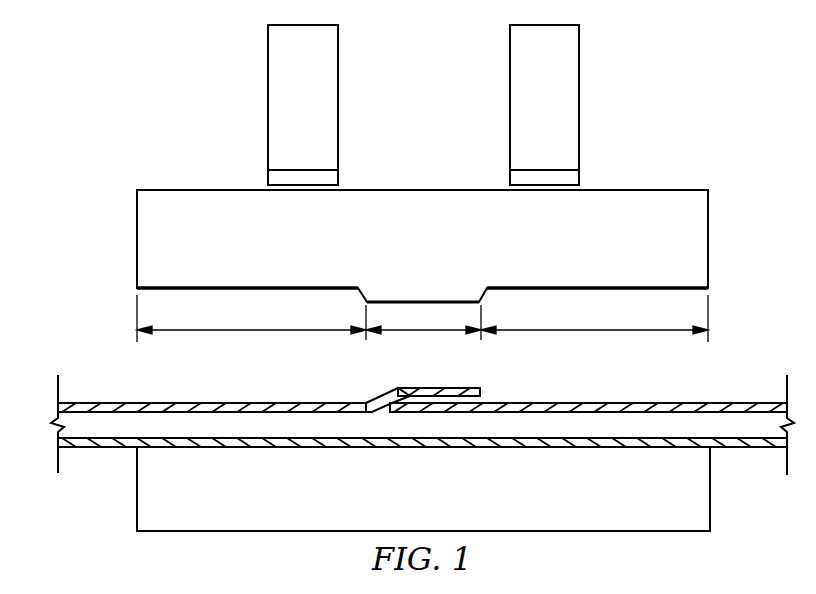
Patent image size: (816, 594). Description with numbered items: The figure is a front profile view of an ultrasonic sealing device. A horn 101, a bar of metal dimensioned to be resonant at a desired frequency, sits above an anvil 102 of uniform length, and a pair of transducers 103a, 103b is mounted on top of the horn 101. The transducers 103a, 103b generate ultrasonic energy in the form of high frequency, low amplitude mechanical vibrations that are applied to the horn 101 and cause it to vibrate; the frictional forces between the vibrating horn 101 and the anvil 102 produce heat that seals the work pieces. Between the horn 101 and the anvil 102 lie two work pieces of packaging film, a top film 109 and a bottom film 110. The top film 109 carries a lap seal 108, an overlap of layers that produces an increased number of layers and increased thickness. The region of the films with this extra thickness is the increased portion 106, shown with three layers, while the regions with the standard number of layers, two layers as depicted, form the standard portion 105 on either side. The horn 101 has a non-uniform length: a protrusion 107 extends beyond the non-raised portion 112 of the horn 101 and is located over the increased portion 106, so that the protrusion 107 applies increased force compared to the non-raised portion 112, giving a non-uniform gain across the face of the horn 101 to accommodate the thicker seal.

The horn 101 is at (137, 242).
The anvil 102 is at (137, 480).
The transducer 103a is at (268, 106).
The transducer 103b is at (580, 106).
The standard portion 105 is at (272, 331).
The increased portion 106 is at (413, 331).
The protrusion 107 is at (448, 302).
The lap seal 108 is at (470, 387).
The top film 109 is at (130, 400).
The bottom film 110 is at (228, 447).
The non-raised portion 112 is at (245, 288).